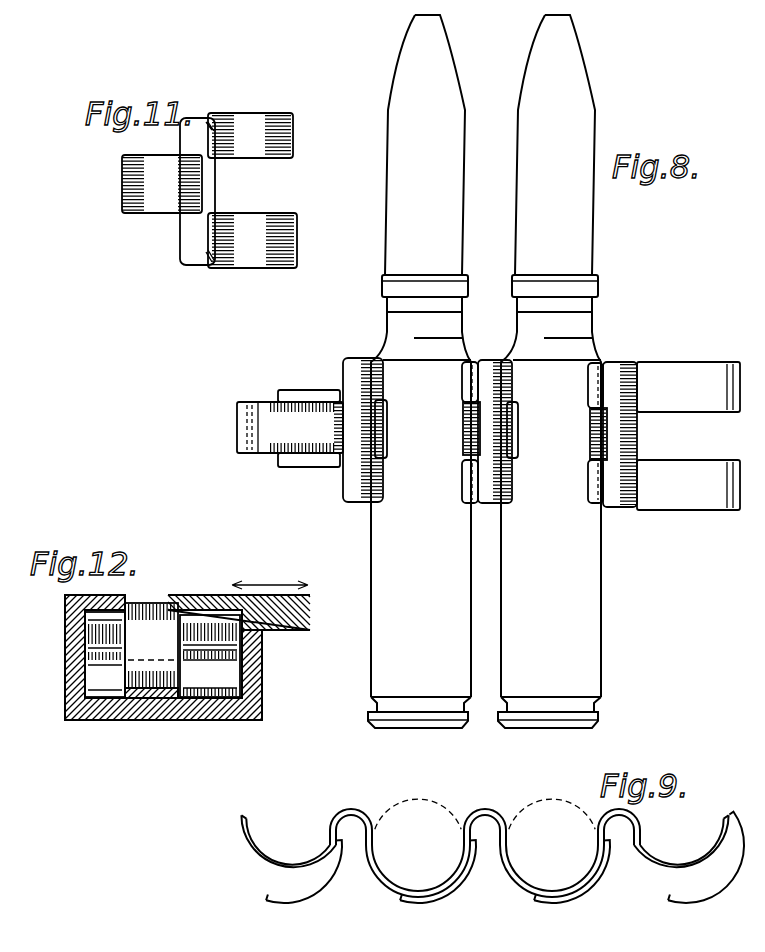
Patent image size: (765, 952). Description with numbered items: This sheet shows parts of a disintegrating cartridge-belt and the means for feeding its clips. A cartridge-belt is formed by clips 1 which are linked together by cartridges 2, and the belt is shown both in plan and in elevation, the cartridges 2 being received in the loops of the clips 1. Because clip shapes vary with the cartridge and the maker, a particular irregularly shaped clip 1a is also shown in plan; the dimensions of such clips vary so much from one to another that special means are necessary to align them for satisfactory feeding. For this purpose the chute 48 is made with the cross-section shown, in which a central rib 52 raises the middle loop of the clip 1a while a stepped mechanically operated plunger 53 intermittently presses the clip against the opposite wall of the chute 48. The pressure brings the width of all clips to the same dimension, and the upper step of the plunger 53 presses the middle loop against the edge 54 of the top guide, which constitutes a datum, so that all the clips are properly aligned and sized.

In FIG. 8, the clip 1 is at (680, 382).
In FIG. 9, the clip 1 is at (316, 893).
In FIG. 11, the clip 1a is at (240, 193).
In FIG. 12, the clip 1a is at (143, 648).
In FIG. 8, the cartridge 2 is at (545, 174).
In FIG. 9, the cartridge 2 is at (535, 803).
In FIG. 12, the chute 48 is at (232, 672).
In FIG. 12, the central rib 52 is at (156, 699).
In FIG. 12, the stepped mechanically operated plunger 53 is at (205, 596).
In FIG. 12, the edge of the top guide 54 is at (125, 602).